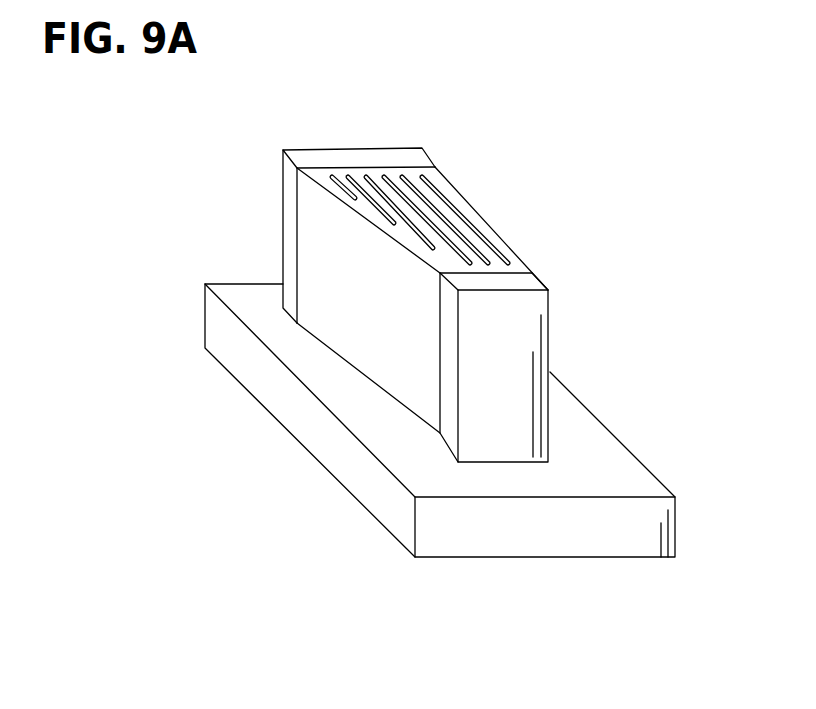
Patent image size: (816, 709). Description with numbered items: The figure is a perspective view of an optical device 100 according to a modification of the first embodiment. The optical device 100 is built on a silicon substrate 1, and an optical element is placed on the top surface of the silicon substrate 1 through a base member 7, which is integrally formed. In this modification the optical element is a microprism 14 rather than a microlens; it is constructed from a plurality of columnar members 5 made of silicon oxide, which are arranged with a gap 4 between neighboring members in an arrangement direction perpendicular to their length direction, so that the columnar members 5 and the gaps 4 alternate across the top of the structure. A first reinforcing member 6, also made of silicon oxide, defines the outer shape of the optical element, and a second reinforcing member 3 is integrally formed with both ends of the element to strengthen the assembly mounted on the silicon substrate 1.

The optical device 100 is at (577, 165).
The silicon substrate 1 is at (675, 523).
The second reinforcing member 3 is at (370, 157).
The gap 4 is at (429, 180).
The columnar member 5 is at (477, 242).
The first reinforcing member 6 is at (380, 223).
The base member 7 is at (383, 367).
The microprism 14 is at (476, 196).